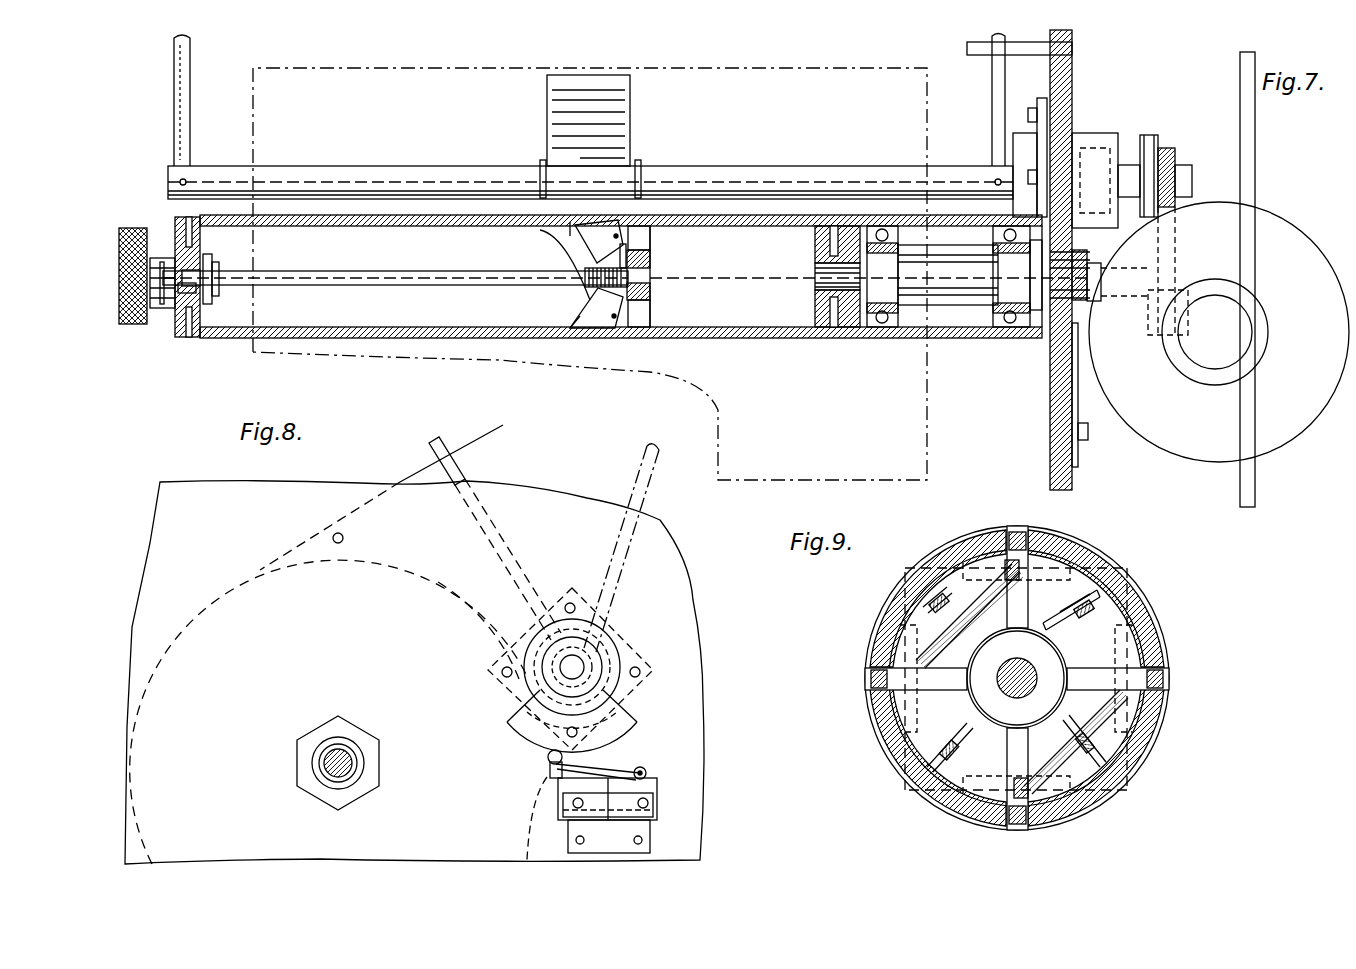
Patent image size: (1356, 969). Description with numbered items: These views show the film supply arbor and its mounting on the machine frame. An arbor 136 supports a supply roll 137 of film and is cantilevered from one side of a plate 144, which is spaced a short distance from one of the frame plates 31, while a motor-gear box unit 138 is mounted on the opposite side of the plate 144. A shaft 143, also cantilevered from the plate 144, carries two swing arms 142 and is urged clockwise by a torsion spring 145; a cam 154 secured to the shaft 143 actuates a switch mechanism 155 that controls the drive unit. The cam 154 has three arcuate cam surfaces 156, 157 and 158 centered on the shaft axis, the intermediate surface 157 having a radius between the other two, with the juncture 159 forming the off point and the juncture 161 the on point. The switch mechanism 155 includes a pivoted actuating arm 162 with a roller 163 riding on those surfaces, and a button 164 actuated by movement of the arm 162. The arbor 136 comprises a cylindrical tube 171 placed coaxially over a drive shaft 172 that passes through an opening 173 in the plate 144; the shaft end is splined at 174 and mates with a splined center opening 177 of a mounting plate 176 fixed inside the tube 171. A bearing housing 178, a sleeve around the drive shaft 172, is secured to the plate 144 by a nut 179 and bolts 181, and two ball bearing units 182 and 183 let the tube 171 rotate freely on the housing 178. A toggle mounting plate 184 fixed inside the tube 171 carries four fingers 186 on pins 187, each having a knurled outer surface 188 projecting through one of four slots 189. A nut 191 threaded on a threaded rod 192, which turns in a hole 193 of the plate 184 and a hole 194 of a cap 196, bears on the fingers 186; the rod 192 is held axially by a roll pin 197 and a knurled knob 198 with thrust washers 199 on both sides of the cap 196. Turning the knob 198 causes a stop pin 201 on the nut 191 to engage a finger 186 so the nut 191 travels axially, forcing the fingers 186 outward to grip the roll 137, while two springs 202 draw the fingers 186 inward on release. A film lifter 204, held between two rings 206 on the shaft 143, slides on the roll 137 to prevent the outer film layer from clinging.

In FIG. 7, the plates of the frame 31 is at (1255, 490).
In FIG. 7, the arbor 136 is at (215, 342).
In FIG. 7, the supply roll 137 is at (927, 430).
In FIG. 8, the supply roll 137 is at (210, 612).
In FIG. 7, the motor-gear box unit 138 is at (1197, 432).
In FIG. 7, the swing arms 142 is at (192, 108).
In FIG. 8, the swing arms 142 is at (445, 445).
In FIG. 7, the shaft 143 is at (853, 168).
In FIG. 8, the shaft 143 is at (600, 660).
In FIG. 7, the plate 144 is at (1072, 82).
In FIG. 8, the plate 144 is at (695, 605).
In FIG. 7, the torsion spring 145 is at (1150, 140).
In FIG. 8, the torsion spring 145 is at (615, 682).
In FIG. 7, the cam 154 is at (1170, 205).
In FIG. 8, the cam 154 is at (630, 720).
In FIG. 8, the switch mechanism 155 is at (662, 790).
In FIG. 8, the cam surface 156 is at (510, 722).
In FIG. 8, the cam surface 157 is at (545, 755).
In FIG. 8, the cam surface 158 is at (622, 742).
In FIG. 8, the juncture 159 is at (528, 742).
In FIG. 8, the juncture 161 is at (600, 765).
In FIG. 8, the actuating arm 162 is at (609, 836).
In FIG. 8, the roller 163 is at (548, 770).
In FIG. 8, the button 164 is at (540, 780).
In FIG. 7, the cylindrical tube 171 is at (718, 340).
In FIG. 7, the drive shaft 172 is at (975, 310).
In FIG. 8, the drive shaft 172 is at (325, 768).
In FIG. 7, the opening 173 is at (1060, 338).
In FIG. 7, the splined end 174 is at (815, 276).
In FIG. 7, the mounting plate 176 is at (815, 300).
In FIG. 7, the splined center opening 177 is at (815, 262).
In FIG. 7, the bearing housing 178 is at (920, 300).
In FIG. 8, the bearing housing 178 is at (350, 742).
In FIG. 7, the nut 179 is at (1042, 100).
In FIG. 8, the nut 179 is at (565, 600).
In FIG. 7, the bolts 181 is at (1028, 177).
In FIG. 8, the bolts 181 is at (575, 605).
In FIG. 7, the ball bearing unit 182 is at (875, 338).
In FIG. 7, the ball bearing unit 183 is at (1015, 338).
In FIG. 7, the toggle mounting plate 184 is at (650, 295).
In FIG. 7, the fingers 186 is at (590, 300).
In FIG. 9, the fingers 186 is at (1025, 552).
In FIG. 7, the pins 187 is at (650, 244).
In FIG. 9, the pins 187 is at (1060, 568).
In FIG. 7, the knurled outer surface 188 is at (590, 224).
In FIG. 7, the slots 189 is at (630, 222).
In FIG. 9, the slots 189 is at (1015, 528).
In FIG. 7, the nut 191 is at (626, 330).
In FIG. 9, the nut 191 is at (1050, 660).
In FIG. 7, the threaded rod 192 is at (378, 262).
In FIG. 9, the threaded rod 192 is at (1010, 693).
In FIG. 7, the hole 193 is at (650, 270).
In FIG. 7, the hole 194 is at (210, 275).
In FIG. 7, the cap 196 is at (200, 298).
In FIG. 7, the roll pin 197 is at (222, 272).
In FIG. 7, the knurled knob 198 is at (122, 228).
In FIG. 7, the thrust washers 199 is at (162, 295).
In FIG. 7, the stop pin 201 is at (620, 248).
In FIG. 9, the stop pin 201 is at (1050, 620).
In FIG. 9, the springs 202 is at (935, 625).
In FIG. 7, the film lifter 204 is at (620, 110).
In FIG. 8, the film lifter 204 is at (470, 595).
In FIG. 7, the rings 206 is at (540, 180).